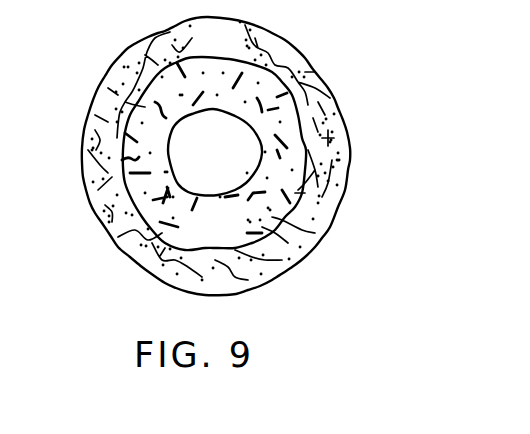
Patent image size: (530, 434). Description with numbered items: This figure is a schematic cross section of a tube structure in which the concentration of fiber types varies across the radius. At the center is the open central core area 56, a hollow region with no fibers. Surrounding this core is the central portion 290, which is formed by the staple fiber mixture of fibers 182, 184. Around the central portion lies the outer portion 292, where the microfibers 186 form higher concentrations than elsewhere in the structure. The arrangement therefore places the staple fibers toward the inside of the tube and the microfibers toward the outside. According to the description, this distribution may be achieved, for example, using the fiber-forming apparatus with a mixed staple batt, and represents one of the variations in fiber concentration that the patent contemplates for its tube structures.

The open central core area 56 is at (228, 162).
The staple fiber 182 is at (168, 193).
The staple fiber 184 is at (275, 112).
The microfibers 186 is at (315, 228).
The central portion 290 is at (233, 235).
The outer portion 292 is at (232, 51).